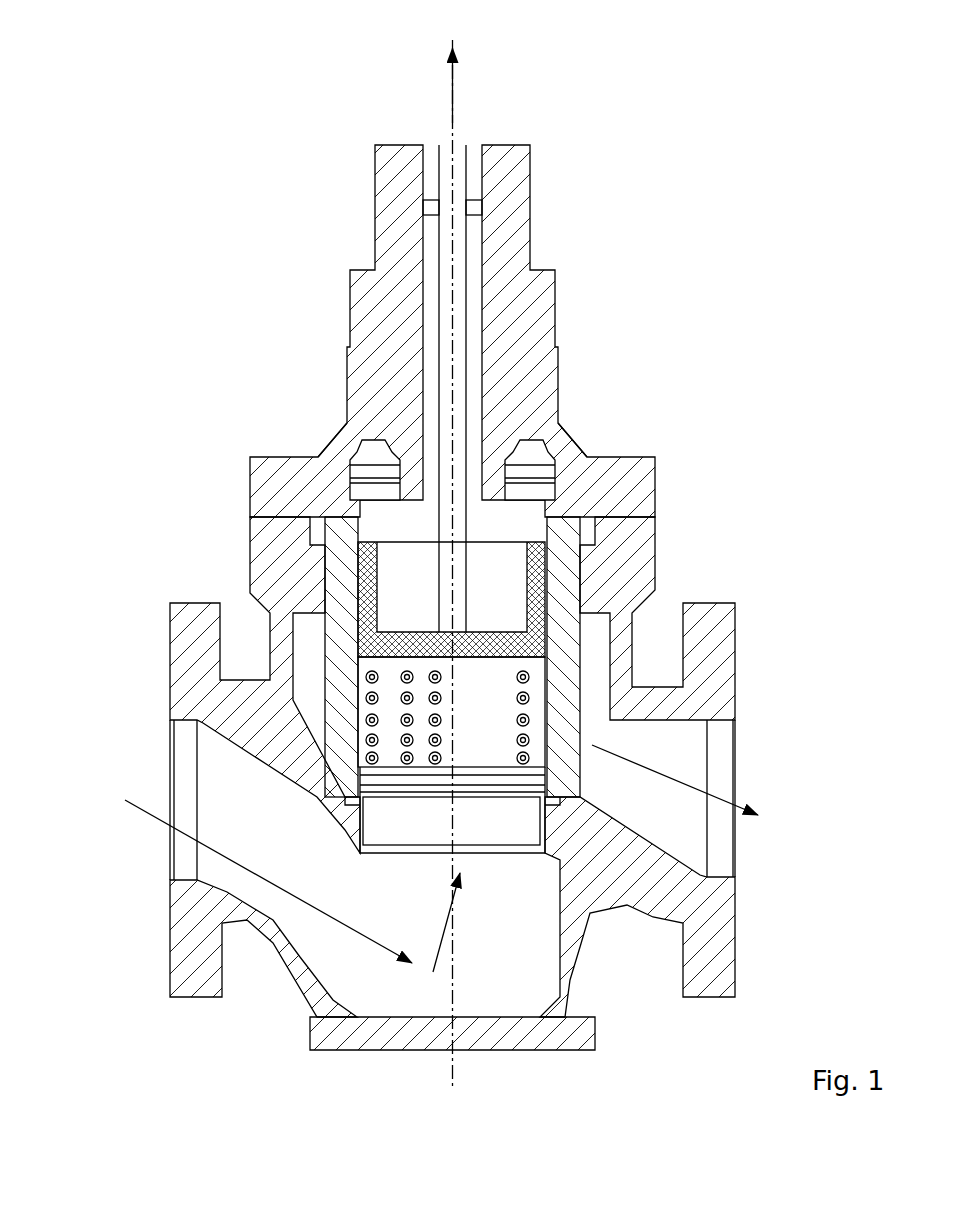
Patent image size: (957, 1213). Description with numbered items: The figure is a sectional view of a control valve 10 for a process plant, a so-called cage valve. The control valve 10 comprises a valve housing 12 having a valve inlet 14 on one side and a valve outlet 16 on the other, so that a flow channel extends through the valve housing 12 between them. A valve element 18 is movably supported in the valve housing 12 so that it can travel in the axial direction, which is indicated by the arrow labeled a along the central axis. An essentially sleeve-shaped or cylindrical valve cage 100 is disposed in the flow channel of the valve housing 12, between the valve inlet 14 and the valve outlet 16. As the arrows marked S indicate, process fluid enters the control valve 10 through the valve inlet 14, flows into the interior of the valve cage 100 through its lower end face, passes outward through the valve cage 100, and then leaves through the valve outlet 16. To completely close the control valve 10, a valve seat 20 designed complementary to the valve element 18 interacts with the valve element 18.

The control valve 10 is at (448, 548).
The valve housing 12 is at (650, 567).
The valve inlet 14 is at (168, 753).
The valve outlet 16 is at (738, 863).
The valve element 18 is at (532, 617).
The valve seat 20 is at (370, 775).
The valve cage 100 is at (340, 605).